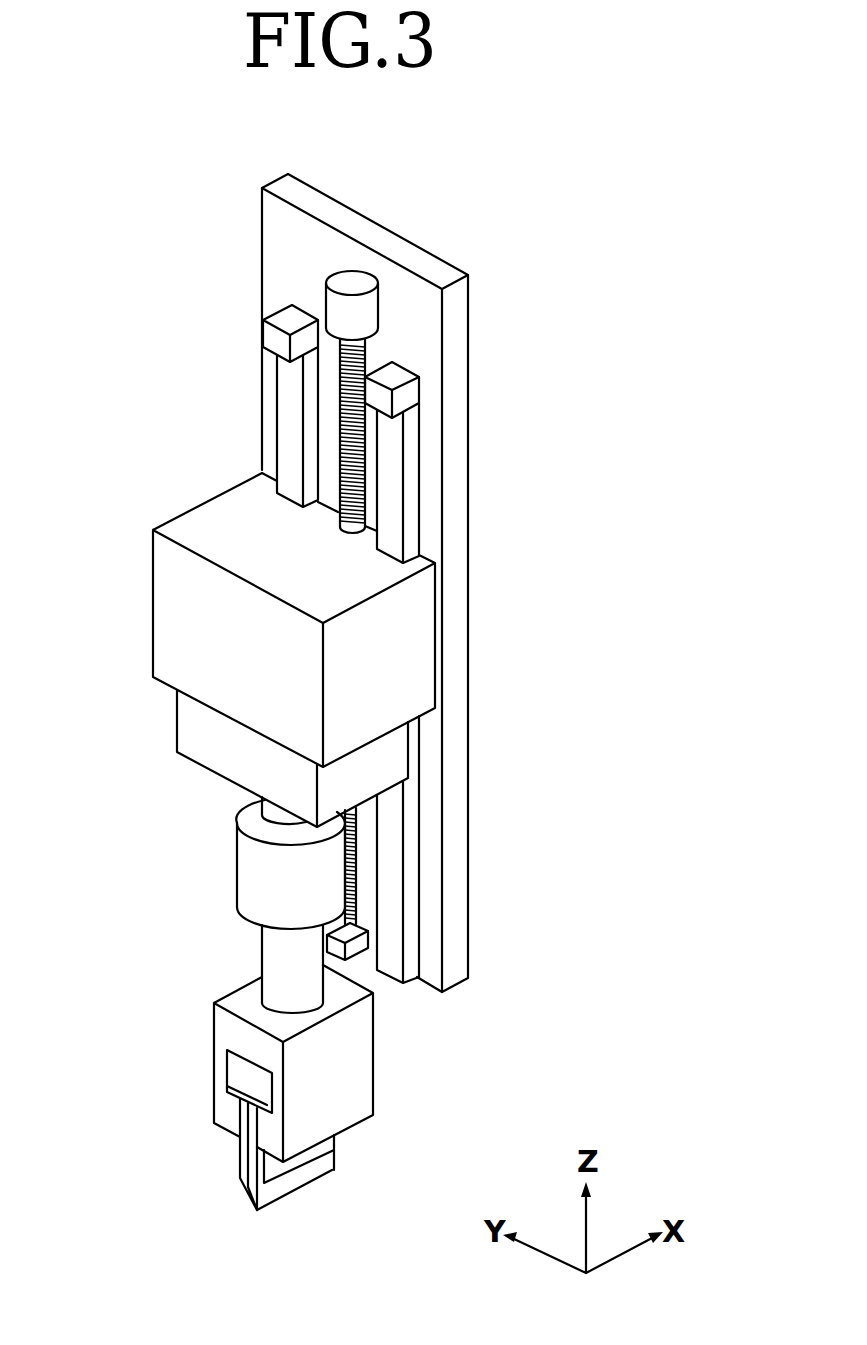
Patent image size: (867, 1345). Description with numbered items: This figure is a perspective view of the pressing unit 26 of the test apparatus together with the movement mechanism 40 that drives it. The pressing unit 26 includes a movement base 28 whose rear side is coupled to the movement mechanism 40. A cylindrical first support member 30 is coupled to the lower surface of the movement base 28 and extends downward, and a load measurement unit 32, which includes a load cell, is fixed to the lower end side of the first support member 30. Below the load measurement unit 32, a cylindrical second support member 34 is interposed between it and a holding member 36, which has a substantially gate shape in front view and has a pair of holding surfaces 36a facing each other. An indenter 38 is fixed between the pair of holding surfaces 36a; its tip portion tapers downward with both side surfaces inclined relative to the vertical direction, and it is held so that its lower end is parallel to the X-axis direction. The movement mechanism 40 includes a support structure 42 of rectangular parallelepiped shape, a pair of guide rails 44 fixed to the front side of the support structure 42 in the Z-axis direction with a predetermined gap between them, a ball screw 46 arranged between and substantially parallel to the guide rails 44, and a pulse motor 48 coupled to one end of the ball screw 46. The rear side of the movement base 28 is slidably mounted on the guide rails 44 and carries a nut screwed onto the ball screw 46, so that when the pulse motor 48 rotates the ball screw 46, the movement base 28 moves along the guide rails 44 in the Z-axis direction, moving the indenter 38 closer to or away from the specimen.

The pressing unit 26 is at (190, 476).
The movement base 28 is at (198, 630).
The first support member 30 is at (273, 810).
The load measurement unit 32 is at (257, 885).
The second support member 34 is at (283, 957).
The holding member 36 is at (352, 1063).
The holding surfaces 36a is at (241, 1120).
The indenter 38 is at (297, 1182).
The movement mechanism 40 is at (537, 303).
The support structure 42 is at (457, 455).
The guide rails 44 is at (285, 320).
The ball screw 46 is at (345, 422).
The pulse motor 48 is at (356, 278).